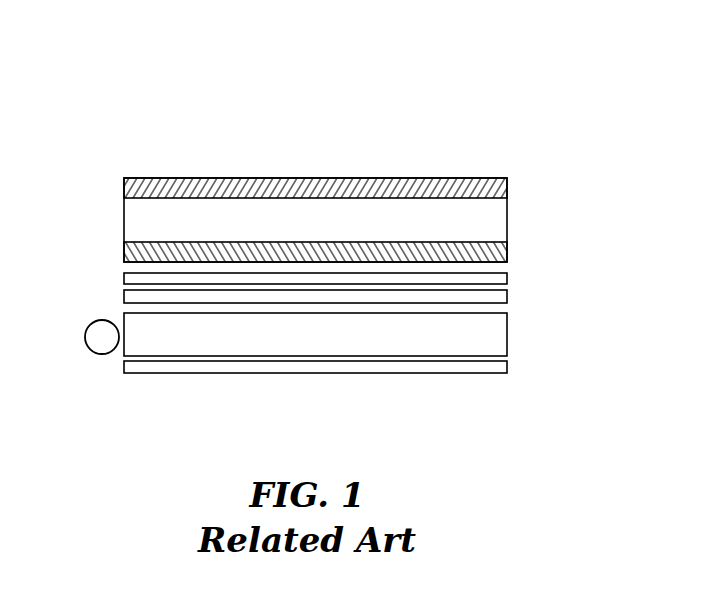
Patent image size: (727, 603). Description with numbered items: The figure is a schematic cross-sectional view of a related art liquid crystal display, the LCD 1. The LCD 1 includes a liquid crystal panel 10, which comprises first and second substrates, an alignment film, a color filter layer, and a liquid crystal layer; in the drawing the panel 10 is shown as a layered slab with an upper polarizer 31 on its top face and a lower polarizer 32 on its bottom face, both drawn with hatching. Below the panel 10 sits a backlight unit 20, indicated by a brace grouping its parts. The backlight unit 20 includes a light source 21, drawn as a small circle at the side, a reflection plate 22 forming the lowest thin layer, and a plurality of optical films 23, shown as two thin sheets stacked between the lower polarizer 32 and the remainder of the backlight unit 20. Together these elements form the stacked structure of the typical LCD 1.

The LCD 1 is at (474, 116).
The liquid crystal panel 10 is at (359, 226).
The upper polarizer 31 is at (508, 188).
The lower polarizer 32 is at (508, 248).
The backlight unit 20 is at (83, 281).
The light source 21 is at (102, 337).
The reflection plate 22 is at (310, 361).
The optical films 23 is at (515, 273).